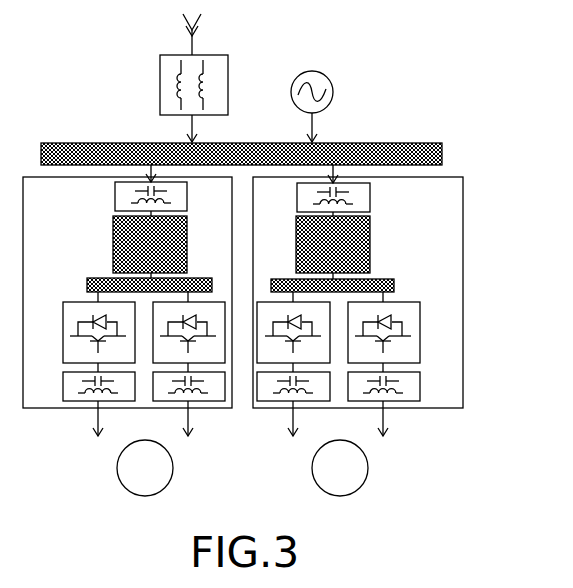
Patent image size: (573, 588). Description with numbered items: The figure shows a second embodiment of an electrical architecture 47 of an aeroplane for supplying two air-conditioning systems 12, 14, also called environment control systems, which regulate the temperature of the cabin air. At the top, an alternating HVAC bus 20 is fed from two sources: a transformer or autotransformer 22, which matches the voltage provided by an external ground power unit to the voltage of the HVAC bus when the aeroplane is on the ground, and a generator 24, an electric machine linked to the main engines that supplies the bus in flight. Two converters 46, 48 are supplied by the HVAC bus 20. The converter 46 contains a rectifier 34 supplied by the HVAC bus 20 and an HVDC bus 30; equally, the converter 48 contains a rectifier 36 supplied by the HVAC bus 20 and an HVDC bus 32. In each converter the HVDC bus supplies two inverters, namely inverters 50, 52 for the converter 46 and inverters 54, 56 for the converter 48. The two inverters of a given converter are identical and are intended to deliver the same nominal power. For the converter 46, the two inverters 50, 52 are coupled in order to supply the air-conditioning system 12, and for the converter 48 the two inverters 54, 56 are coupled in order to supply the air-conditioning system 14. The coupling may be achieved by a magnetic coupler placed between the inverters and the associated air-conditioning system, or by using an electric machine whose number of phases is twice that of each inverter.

The air-conditioning system 12 is at (117, 468).
The air-conditioning system 14 is at (368, 470).
The alternating bus 20 is at (443, 152).
The transformer or autotransformer 22 is at (228, 67).
The generator 24 is at (333, 95).
The HVDC bus 30 is at (87, 283).
The HVDC bus 32 is at (394, 285).
The rectifier 34 is at (188, 242).
The rectifier 36 is at (371, 256).
The converter 46 is at (58, 208).
The converter 48 is at (456, 207).
The inverter 50 is at (63, 340).
The inverter 52 is at (213, 300).
The inverter 54 is at (260, 300).
The inverter 56 is at (421, 337).
The electrical architecture 47 is at (523, 303).